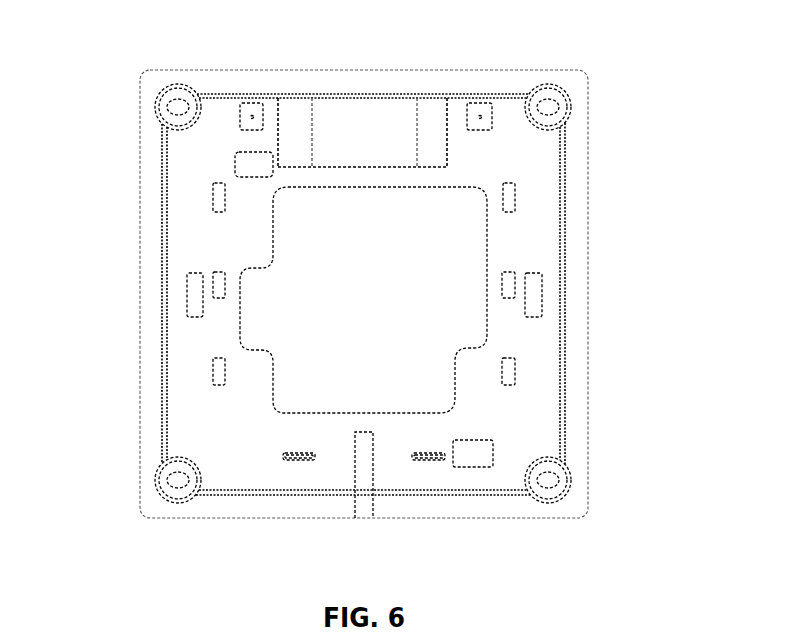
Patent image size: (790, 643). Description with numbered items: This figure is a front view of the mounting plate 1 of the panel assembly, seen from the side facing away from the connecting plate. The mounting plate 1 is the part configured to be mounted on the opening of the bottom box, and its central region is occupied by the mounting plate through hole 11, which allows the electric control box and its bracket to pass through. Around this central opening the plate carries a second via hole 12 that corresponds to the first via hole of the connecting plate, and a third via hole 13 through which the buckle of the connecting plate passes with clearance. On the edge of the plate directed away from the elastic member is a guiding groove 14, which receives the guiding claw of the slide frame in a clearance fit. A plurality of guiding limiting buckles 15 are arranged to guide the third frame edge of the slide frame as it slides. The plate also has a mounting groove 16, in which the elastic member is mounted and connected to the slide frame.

The mounting plate 1 is at (128, 302).
The mounting plate through hole 11 is at (447, 272).
The second via hole 12 is at (198, 300).
The third via hole 13 is at (253, 167).
The guiding groove 14 is at (365, 462).
The guiding limiting buckle 15 is at (218, 203).
The mounting groove 16 is at (293, 127).